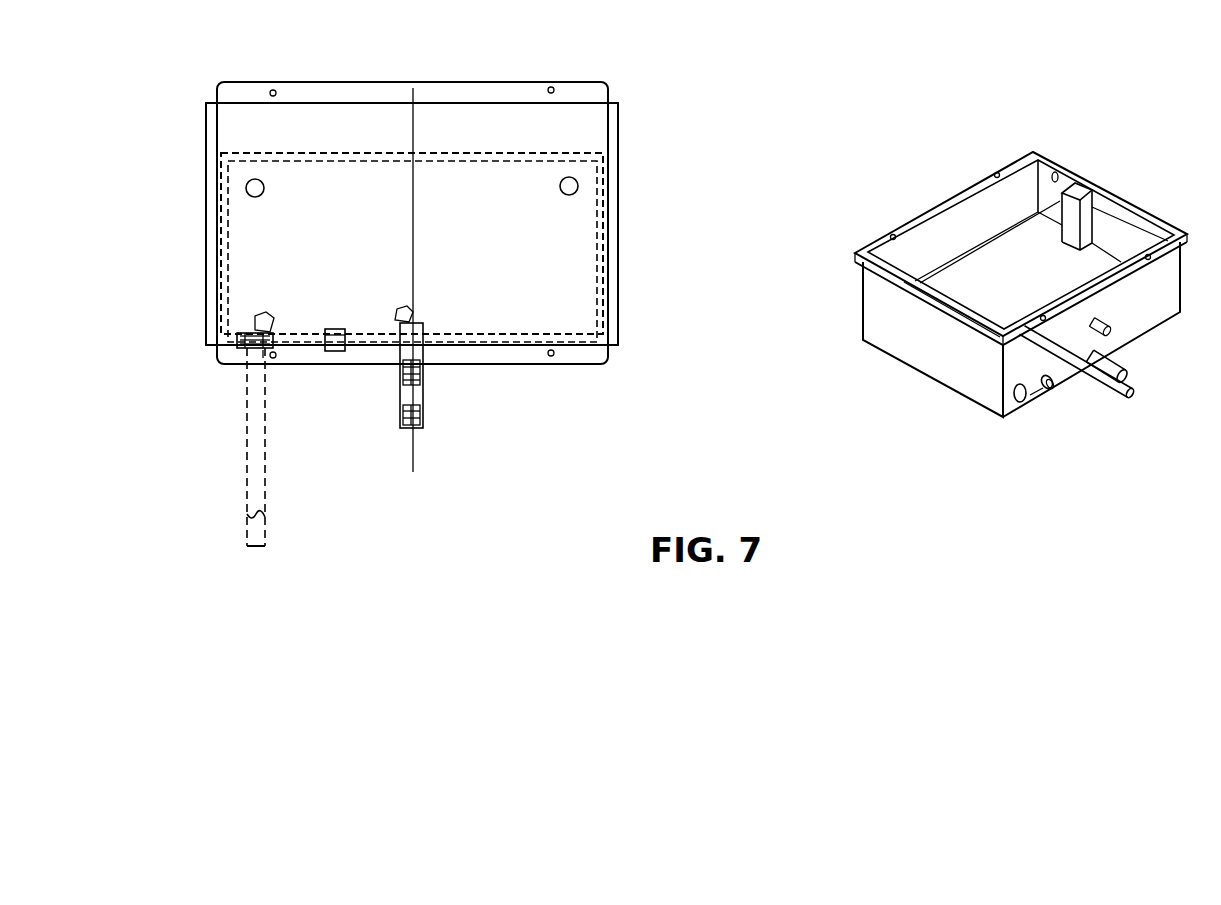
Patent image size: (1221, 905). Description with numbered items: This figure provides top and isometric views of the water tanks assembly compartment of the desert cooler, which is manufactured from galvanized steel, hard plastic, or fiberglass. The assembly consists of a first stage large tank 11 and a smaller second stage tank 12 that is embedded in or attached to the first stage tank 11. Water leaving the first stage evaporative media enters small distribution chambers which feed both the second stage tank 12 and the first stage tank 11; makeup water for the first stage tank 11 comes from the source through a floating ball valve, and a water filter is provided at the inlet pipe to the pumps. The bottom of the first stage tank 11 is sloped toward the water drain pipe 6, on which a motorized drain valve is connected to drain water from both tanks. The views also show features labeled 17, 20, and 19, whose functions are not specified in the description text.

The first stage large tank 11 is at (323, 82).
The second stage tank 12 is at (500, 152).
The mounting post / hole 17 is at (235, 178).
The drain pipe 20 is at (247, 463).
The wall opening 19 is at (1018, 402).
The water drain pipe 6 is at (1050, 390).